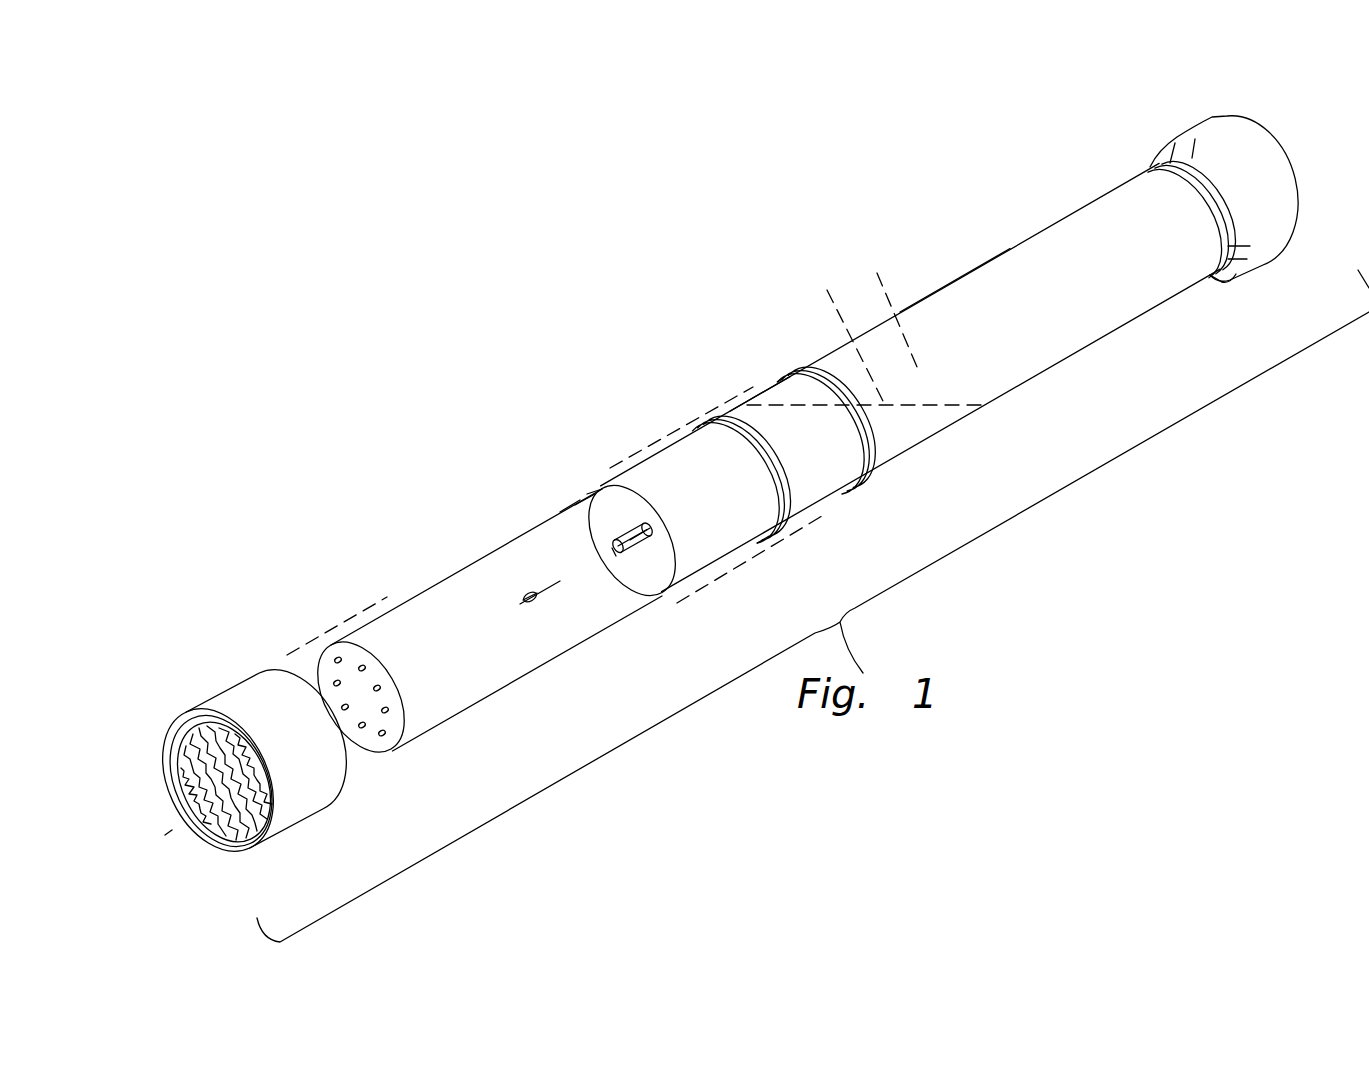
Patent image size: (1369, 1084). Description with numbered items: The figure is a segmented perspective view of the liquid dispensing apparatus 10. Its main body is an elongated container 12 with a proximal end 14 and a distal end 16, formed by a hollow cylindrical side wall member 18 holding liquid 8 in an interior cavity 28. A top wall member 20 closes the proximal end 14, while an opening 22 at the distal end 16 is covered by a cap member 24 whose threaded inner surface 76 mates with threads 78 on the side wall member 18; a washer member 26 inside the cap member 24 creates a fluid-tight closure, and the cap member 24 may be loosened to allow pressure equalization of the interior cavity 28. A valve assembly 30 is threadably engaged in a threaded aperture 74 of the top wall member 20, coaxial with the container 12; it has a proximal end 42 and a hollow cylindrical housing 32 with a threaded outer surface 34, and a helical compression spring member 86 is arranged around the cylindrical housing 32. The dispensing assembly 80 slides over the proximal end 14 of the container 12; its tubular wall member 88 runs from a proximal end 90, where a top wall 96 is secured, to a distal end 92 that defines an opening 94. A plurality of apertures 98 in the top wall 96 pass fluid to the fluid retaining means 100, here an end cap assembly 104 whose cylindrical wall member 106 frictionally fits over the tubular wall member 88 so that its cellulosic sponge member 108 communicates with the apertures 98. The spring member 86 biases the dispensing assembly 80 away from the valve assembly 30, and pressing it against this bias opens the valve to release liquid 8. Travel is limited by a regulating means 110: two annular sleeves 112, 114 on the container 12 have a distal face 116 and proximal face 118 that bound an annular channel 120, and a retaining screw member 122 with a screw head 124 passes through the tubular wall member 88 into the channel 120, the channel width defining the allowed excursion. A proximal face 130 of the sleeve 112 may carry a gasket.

The liquid 8 is at (865, 336).
The liquid dispensing apparatus 10 is at (973, 327).
The elongated container 12 is at (968, 283).
The proximal end 14 is at (625, 452).
The distal end 16 is at (1187, 210).
The side wall member 18 is at (1020, 237).
The top wall member 20 is at (620, 503).
The opening 22 is at (1222, 280).
The cap member 24 is at (1290, 170).
The washer member 26 is at (1230, 290).
The interior cavity 28 is at (889, 303).
The valve assembly 30 is at (625, 518).
The cylindrical housing 32 is at (640, 553).
The threaded outer surface 34 is at (633, 560).
The proximal end 42 is at (622, 556).
The threaded aperture 74 is at (636, 543).
The threaded inner surface 76 is at (1163, 160).
The threads 78 is at (1162, 160).
The dispensing assembly 80 is at (485, 581).
The helical compression spring member 86 is at (580, 490).
The tubular wall member 88 is at (412, 597).
The proximal end 90 is at (325, 615).
The distal end 92 is at (533, 480).
The opening 94 is at (583, 513).
The top wall 96 is at (355, 678).
The apertures 98 is at (362, 727).
The fluid retaining means 100 is at (165, 835).
The end cap assembly 104 is at (207, 723).
The cylindrical wall member 106 is at (200, 705).
The sponge member 108 is at (173, 770).
The regulating means 110 is at (837, 520).
The annular sleeve 112 is at (770, 535).
The annular sleeve 114 is at (794, 374).
The distal face 116 is at (815, 467).
The proximal face 118 is at (780, 381).
The annular channel 120 is at (728, 518).
The retaining screw member 122 is at (529, 603).
The screw head 124 is at (540, 600).
The proximal face 130 is at (766, 538).